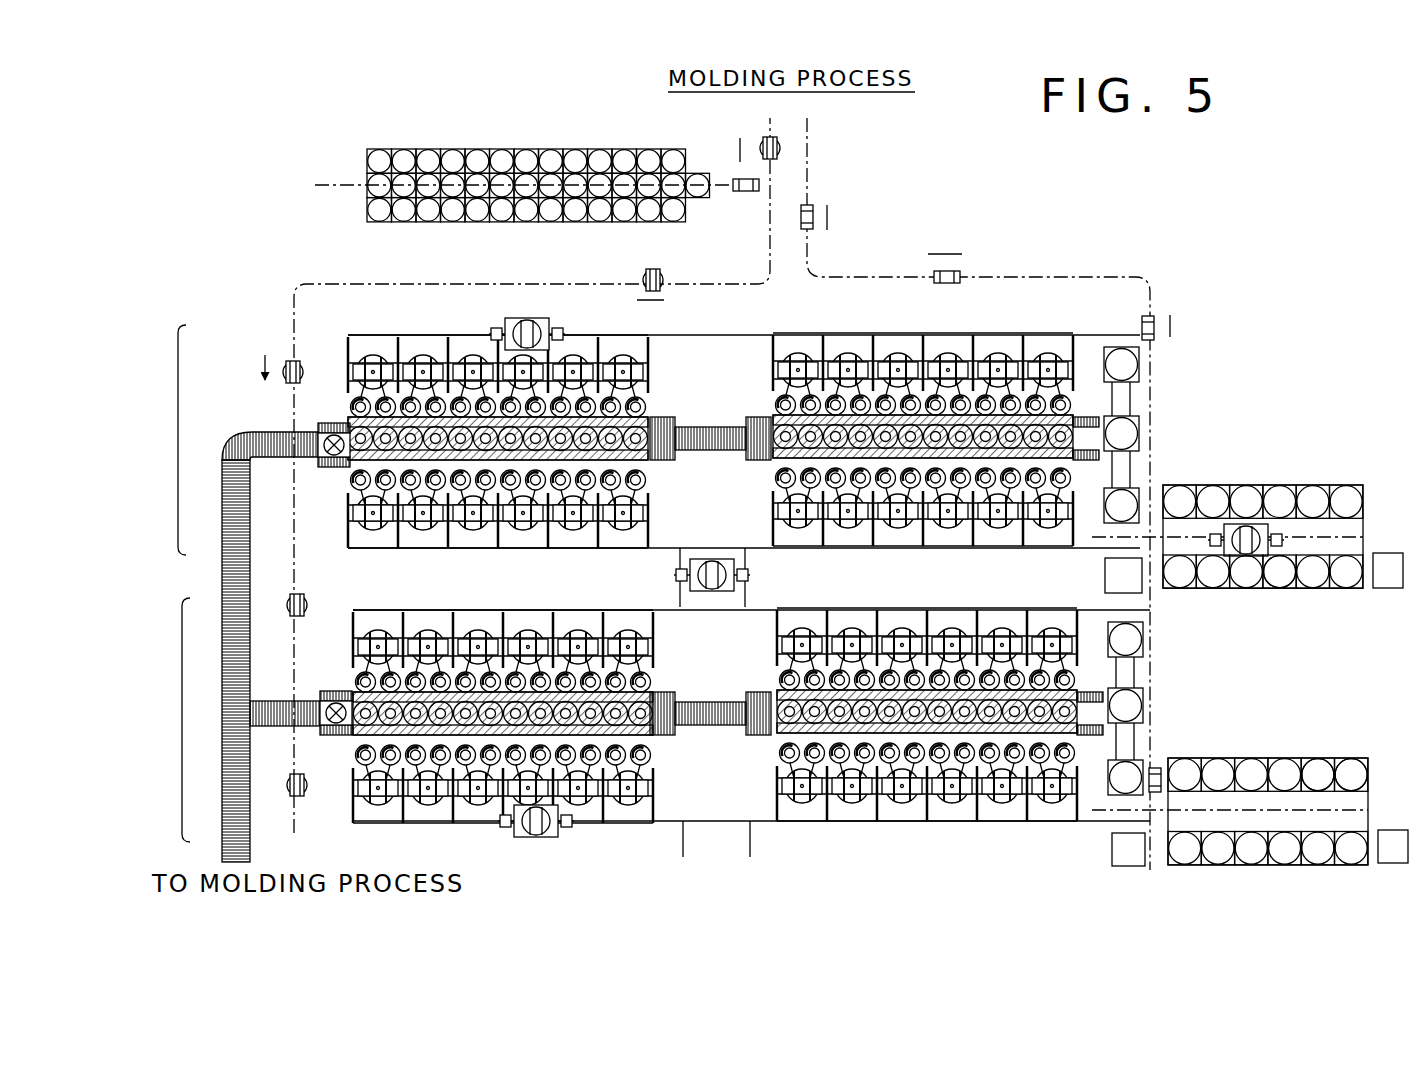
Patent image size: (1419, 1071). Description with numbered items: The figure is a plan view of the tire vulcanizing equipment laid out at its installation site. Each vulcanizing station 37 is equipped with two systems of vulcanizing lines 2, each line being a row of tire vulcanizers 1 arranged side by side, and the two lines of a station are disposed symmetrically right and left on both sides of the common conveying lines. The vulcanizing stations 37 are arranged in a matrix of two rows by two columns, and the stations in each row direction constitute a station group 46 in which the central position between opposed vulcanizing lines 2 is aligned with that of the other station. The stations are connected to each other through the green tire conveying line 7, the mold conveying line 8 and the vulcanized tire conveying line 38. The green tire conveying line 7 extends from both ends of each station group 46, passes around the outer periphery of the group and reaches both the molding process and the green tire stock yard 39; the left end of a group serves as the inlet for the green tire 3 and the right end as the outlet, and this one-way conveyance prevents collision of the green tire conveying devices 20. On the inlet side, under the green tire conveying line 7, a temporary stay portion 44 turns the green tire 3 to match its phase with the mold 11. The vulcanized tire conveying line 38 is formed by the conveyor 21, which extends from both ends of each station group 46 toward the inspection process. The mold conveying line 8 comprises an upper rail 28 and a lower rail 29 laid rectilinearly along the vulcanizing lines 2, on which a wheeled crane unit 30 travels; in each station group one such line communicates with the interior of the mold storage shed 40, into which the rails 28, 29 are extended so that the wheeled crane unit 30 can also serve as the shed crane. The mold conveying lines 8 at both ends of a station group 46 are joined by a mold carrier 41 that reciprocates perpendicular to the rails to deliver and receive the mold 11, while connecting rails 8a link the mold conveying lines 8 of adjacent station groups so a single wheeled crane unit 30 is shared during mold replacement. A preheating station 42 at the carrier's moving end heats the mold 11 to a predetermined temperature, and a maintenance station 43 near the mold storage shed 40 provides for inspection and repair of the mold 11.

The tire vulcanizer 1 is at (622, 356).
The vulcanizing line 2 is at (1075, 358).
The green tire 3 is at (782, 150).
The green tire conveying line 7 is at (840, 274).
The mold conveying line 8 is at (744, 333).
The connecting rails 8a is at (746, 549).
The mold 11 is at (1283, 578).
The green tire conveying device 20 is at (784, 157).
The conveyor 21 is at (222, 580).
The upper rail 28 is at (814, 333).
The lower rail 29 is at (814, 333).
The wheeled crane unit 30 is at (521, 323).
The vulcanizing station 37 is at (423, 331).
The vulcanized tire conveying line 38 is at (708, 425).
The green tire stock yard 39 is at (568, 146).
The mold storage shed 40 is at (1306, 485).
The mold carrier 41 is at (1140, 436).
The preheating station 42 is at (1143, 580).
The maintenance station 43 is at (1389, 556).
The temporary stay portion 44 is at (335, 466).
The station group 46 is at (178, 447).